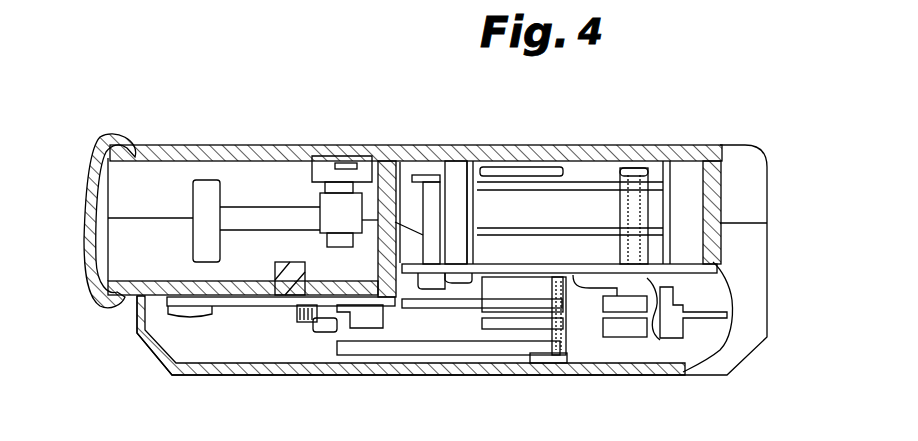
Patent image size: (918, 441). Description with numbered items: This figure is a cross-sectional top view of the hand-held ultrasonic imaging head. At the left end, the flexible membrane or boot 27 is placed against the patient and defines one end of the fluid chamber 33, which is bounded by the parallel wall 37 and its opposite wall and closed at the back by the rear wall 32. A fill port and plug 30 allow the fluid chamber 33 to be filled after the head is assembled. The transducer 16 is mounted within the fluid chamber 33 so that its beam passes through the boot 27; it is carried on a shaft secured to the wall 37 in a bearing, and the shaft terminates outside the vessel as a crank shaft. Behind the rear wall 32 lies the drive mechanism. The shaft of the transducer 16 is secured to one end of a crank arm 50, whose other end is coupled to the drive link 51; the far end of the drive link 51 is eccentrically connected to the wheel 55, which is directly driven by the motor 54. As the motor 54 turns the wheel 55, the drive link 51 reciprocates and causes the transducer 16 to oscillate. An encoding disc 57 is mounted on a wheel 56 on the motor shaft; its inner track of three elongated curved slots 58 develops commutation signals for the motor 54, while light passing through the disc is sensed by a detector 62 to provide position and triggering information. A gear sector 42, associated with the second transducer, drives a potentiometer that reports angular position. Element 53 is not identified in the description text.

The transducer 16 is at (208, 198).
The flexible membrane or boot 27 is at (92, 188).
The fill port and plug 30 is at (188, 282).
The rear wall 32 is at (386, 180).
The fluid chamber 33 is at (276, 182).
The wall 37 is at (205, 150).
The gear sector 42 is at (233, 308).
The crank arm 50 is at (368, 329).
The drive link 51 is at (450, 347).
The foot 53 is at (542, 363).
The motor 54 is at (573, 212).
The wheel 55 is at (565, 330).
The wheel 56 is at (545, 292).
The encoding disc 57 is at (450, 303).
The elongated curved slots 58 is at (239, 289).
The detector 62 is at (633, 328).